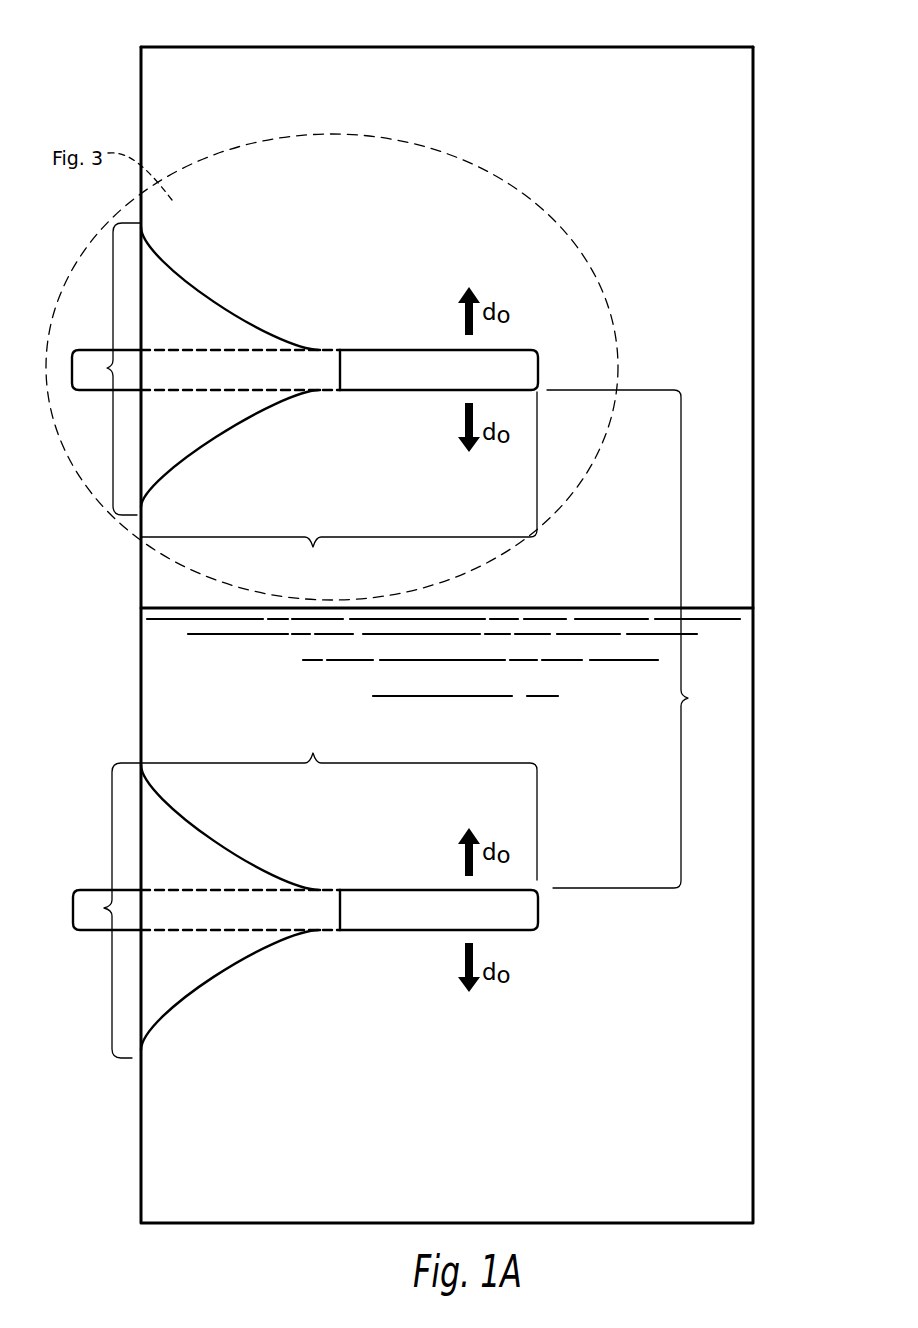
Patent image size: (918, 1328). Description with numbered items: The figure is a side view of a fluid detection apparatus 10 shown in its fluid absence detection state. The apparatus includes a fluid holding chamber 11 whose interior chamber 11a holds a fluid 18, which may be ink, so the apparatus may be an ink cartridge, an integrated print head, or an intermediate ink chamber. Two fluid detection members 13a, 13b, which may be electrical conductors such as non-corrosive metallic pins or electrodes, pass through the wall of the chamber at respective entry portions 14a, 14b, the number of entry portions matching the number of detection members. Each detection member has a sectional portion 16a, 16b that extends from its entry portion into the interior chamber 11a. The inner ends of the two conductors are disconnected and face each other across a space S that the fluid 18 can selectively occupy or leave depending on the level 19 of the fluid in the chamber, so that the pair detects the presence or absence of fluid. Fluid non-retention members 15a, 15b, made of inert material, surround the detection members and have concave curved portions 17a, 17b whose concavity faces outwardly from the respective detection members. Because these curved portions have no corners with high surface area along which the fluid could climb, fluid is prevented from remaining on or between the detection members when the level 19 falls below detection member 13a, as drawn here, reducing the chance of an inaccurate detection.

The fluid detection apparatus 10 is at (507, 24).
The fluid holding chamber 11 is at (141, 47).
The interior chamber 11a is at (630, 62).
The fluid detection member 13a is at (538, 358).
The fluid detection member 13b is at (538, 897).
The entry portion 14a is at (105, 368).
The entry portion 14b is at (102, 908).
The fluid non-retention member 15a is at (168, 305).
The fluid non-retention member 15b is at (160, 975).
The sectional portion 16a is at (339, 484).
The sectional portion 16b is at (339, 802).
The concave curved portion 17a is at (243, 327).
The concave curved portion 17b is at (215, 973).
The fluid 18 is at (717, 920).
The level 19 is at (541, 606).
The space S is at (631, 639).